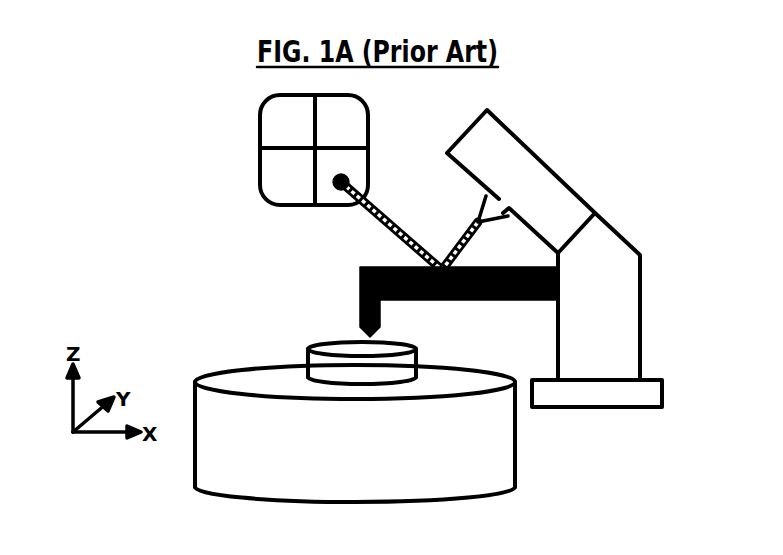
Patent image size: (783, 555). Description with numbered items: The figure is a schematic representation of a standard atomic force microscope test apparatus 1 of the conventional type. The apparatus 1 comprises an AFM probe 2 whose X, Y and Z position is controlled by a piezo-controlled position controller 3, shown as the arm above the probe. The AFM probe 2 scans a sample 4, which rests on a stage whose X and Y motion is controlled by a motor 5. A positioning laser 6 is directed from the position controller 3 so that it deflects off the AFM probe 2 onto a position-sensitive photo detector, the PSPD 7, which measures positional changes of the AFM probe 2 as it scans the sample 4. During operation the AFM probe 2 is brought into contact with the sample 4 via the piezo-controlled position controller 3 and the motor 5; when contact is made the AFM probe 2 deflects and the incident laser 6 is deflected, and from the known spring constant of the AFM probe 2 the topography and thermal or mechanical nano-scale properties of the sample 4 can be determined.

The AFM test apparatus 1 is at (158, 250).
The AFM probe 2 is at (360, 313).
The piezo-controlled position controller 3 is at (640, 292).
The sample 4 is at (410, 358).
The motor 5 is at (511, 476).
The positioning laser 6 is at (373, 200).
The PSPD 7 is at (260, 137).